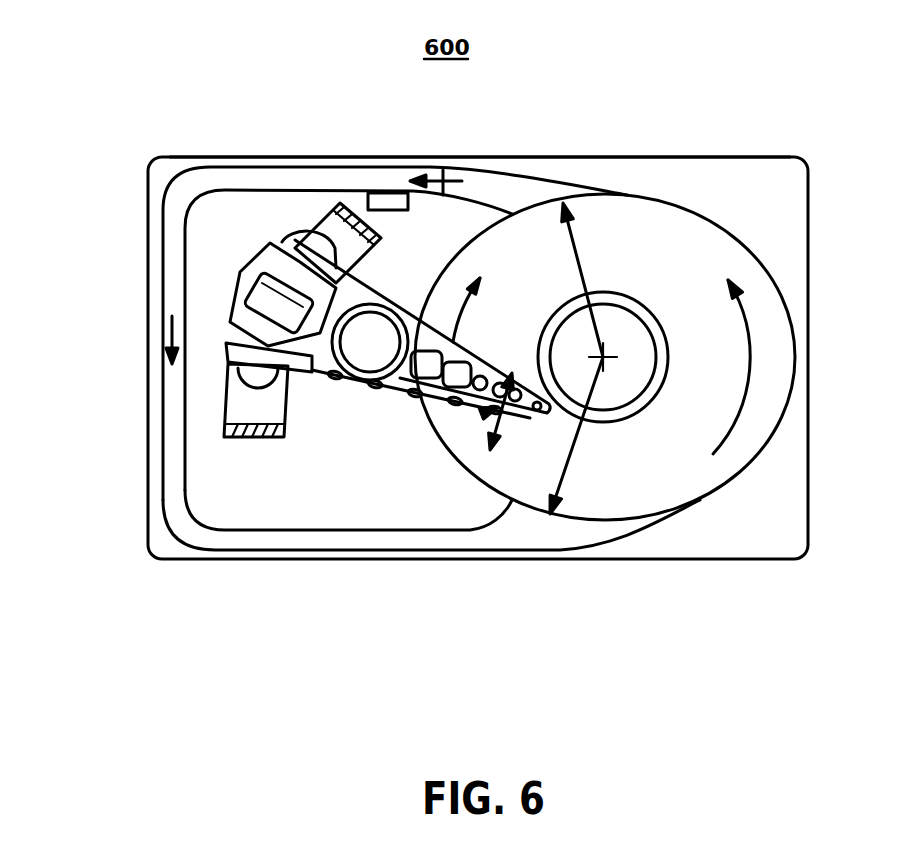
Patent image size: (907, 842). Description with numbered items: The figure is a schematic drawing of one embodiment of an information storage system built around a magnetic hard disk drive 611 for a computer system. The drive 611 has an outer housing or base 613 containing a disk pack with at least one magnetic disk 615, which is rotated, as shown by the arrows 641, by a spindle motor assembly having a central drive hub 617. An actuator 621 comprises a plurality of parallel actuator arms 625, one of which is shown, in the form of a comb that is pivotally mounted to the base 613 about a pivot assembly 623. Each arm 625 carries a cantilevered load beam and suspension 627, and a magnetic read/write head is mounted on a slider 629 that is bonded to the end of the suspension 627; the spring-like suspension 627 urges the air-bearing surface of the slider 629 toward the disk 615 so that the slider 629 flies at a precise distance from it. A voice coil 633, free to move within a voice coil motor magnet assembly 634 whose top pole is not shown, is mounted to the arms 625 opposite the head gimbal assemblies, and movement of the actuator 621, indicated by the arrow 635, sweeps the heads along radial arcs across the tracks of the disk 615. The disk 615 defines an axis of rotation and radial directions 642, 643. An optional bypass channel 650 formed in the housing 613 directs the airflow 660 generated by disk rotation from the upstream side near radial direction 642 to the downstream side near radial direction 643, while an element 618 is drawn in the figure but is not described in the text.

The magnetic hard disk drive 611 is at (808, 452).
The outer housing or base 613 is at (670, 157).
The magnetic disk 615 is at (683, 222).
The central drive hub 617 is at (628, 300).
The filter 618 is at (400, 212).
The actuator 621 is at (298, 454).
The pivot assembly 623 is at (347, 383).
The actuator arm 625 is at (422, 330).
The suspension 627 is at (453, 351).
The slider 629 is at (537, 409).
The voice coil 633 is at (248, 262).
The voice coil motor magnet assembly 634 is at (332, 228).
The arrow indicating actuator movement 635 is at (484, 412).
The arrows indicating disk rotation 641 is at (740, 318).
The radial direction 642 is at (590, 256).
The radial direction 643 is at (565, 462).
The bypass channel 650 is at (393, 183).
The airflow 660 is at (172, 325).